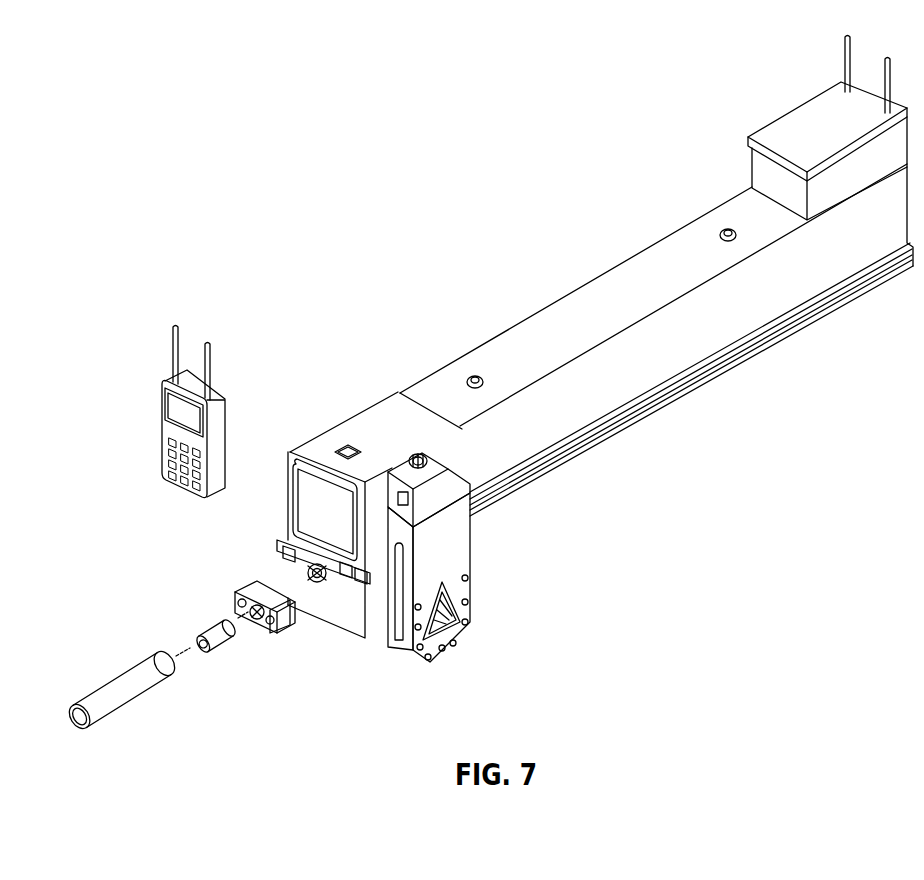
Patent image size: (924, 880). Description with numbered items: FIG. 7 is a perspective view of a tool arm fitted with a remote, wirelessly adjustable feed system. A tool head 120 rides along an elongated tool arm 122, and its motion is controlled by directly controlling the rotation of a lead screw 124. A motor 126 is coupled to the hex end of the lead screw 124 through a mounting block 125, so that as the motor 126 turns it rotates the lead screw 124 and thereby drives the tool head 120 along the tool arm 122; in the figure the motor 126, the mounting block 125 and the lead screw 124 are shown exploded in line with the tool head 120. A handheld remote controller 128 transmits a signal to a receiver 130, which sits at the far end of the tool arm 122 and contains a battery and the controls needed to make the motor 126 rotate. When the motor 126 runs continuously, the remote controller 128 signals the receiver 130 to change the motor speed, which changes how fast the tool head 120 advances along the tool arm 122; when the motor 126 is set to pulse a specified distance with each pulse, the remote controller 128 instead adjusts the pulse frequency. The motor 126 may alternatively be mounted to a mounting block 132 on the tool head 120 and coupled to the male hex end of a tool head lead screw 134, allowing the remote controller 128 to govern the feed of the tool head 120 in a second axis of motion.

The tool head 120 is at (449, 530).
The tool arm 122 is at (580, 322).
The lead screw 124 is at (311, 588).
The mounting block 125 is at (260, 600).
The motor 126 is at (128, 682).
The remote controller 128 is at (170, 430).
The receiver 130 is at (828, 120).
The mounting block 132 is at (425, 483).
The tool head lead screw 134 is at (420, 459).